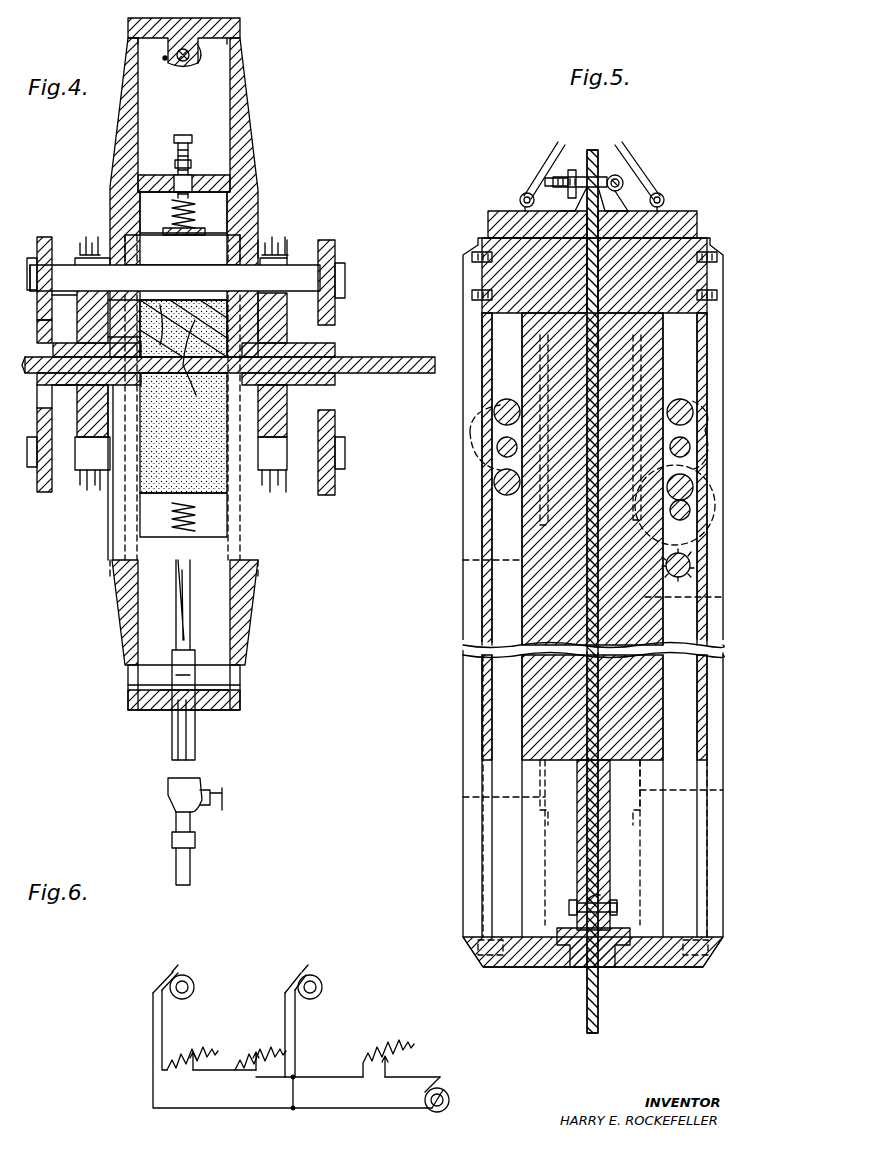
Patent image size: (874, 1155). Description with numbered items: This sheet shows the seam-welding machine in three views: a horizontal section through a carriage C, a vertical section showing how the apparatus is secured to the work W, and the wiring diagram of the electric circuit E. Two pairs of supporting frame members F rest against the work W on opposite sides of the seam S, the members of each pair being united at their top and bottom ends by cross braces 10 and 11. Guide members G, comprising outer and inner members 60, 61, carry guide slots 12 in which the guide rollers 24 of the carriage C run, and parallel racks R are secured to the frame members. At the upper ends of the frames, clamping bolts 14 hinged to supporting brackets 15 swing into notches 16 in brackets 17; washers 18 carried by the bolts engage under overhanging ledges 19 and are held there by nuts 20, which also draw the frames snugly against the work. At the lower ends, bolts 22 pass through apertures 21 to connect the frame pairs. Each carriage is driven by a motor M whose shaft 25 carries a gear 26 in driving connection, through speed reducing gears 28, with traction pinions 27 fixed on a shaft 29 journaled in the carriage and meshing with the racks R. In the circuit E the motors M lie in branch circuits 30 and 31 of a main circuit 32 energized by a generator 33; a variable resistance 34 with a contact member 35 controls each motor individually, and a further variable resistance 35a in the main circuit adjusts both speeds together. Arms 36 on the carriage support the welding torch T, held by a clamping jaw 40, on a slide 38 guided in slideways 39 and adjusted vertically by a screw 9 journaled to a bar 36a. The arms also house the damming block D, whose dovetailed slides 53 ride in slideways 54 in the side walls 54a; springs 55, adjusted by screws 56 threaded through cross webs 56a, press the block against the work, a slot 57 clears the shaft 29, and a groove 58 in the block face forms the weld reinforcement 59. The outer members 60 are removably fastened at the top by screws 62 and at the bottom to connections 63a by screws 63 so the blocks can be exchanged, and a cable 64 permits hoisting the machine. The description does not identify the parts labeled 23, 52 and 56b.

In FIG. 4, the screw 9 is at (186, 62).
In FIG. 5, the cross brace 10 is at (680, 214).
In FIG. 5, the cross brace 11 is at (590, 967).
In FIG. 4, the guide slot 12 is at (75, 262).
In FIG. 5, the guide slot 12 is at (500, 328).
In FIG. 5, the clamping bolt 14 is at (607, 180).
In FIG. 5, the supporting bracket 15 is at (645, 205).
In FIG. 5, the notch 16 is at (572, 180).
In FIG. 5, the bracket 17 is at (572, 197).
In FIG. 5, the washer 18 is at (572, 172).
In FIG. 5, the overhanging ledge 19 is at (572, 168).
In FIG. 5, the nut 20 is at (560, 176).
In FIG. 5, the aperture 21 is at (615, 900).
In FIG. 5, the bolt 22 is at (618, 902).
In FIG. 5, the wire bend 23 is at (600, 338).
In FIG. 4, the guide roller 24 is at (88, 298).
In FIG. 5, the guide roller 24 is at (506, 398).
In FIG. 5, the shaft 25 is at (690, 575).
In FIG. 5, the gear 26 is at (692, 560).
In FIG. 4, the traction pinion 27 is at (38, 256).
In FIG. 5, the traction pinion 27 is at (500, 430).
In FIG. 5, the speed reducing gear 28 is at (714, 518).
In FIG. 4, the shaft 29 is at (183, 268).
In FIG. 5, the shaft 29 is at (497, 448).
In FIG. 6, the branch circuit 30 is at (146, 1007).
In FIG. 6, the branch circuit 31 is at (295, 1015).
In FIG. 6, the main circuit 32 is at (410, 1077).
In FIG. 6, the generator 33 is at (446, 1088).
In FIG. 6, the variable resistance 34 is at (250, 1060).
In FIG. 6, the contact member 35 is at (185, 1070).
In FIG. 6, the variable resistance 35a is at (385, 1055).
In FIG. 4, the arm 36 is at (118, 114).
In FIG. 4, the bar 36a is at (212, 668).
In FIG. 4, the slide 38 is at (176, 56).
In FIG. 4, the slideway 39 is at (128, 30).
In FIG. 4, the clamping jaw 40 is at (218, 706).
In FIG. 4, the tube 52 is at (183, 622).
In FIG. 4, the dovetailed slide 53 is at (235, 248).
In FIG. 4, the slideway 54 is at (118, 190).
In FIG. 4, the side wall 54a is at (118, 232).
In FIG. 4, the spring 55 is at (205, 232).
In FIG. 4, the screw 56 is at (178, 134).
In FIG. 4, the cross web 56a is at (208, 175).
In FIG. 4, the housing section 56b is at (182, 397).
In FIG. 4, the slot 57 is at (202, 323).
In FIG. 4, the groove 58 is at (183, 396).
In FIG. 4, the reinforcement 59 is at (160, 355).
In FIG. 4, the outer member 60 is at (78, 250).
In FIG. 5, the outer member 60 is at (723, 847).
In FIG. 5, the inner member 61 is at (668, 878).
In FIG. 5, the screw 62 is at (476, 295).
In FIG. 4, the screw 63 is at (98, 240).
In FIG. 5, the screw 63 is at (478, 958).
In FIG. 5, the connection 63a is at (528, 965).
In FIG. 5, the cable 64 is at (550, 158).
In FIG. 4, the carriage C is at (262, 135).
In FIG. 4, the block D is at (213, 235).
In FIG. 6, the electric circuit E is at (308, 1044).
In FIG. 4, the frame member F is at (325, 335).
In FIG. 4, the guide member G is at (290, 243).
In FIG. 5, the guide member G is at (470, 616).
In FIG. 6, the motor M is at (186, 972).
In FIG. 4, the rack R is at (52, 330).
In FIG. 5, the rack R is at (604, 630).
In FIG. 4, the seam S is at (175, 283).
In FIG. 4, the welding torch T is at (195, 752).
In FIG. 4, the work W is at (418, 365).
In FIG. 5, the work W is at (598, 612).